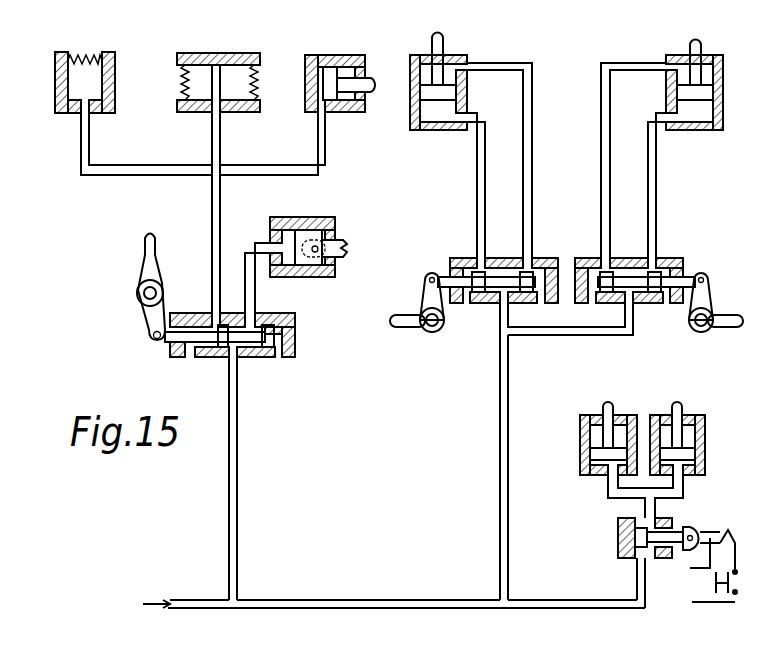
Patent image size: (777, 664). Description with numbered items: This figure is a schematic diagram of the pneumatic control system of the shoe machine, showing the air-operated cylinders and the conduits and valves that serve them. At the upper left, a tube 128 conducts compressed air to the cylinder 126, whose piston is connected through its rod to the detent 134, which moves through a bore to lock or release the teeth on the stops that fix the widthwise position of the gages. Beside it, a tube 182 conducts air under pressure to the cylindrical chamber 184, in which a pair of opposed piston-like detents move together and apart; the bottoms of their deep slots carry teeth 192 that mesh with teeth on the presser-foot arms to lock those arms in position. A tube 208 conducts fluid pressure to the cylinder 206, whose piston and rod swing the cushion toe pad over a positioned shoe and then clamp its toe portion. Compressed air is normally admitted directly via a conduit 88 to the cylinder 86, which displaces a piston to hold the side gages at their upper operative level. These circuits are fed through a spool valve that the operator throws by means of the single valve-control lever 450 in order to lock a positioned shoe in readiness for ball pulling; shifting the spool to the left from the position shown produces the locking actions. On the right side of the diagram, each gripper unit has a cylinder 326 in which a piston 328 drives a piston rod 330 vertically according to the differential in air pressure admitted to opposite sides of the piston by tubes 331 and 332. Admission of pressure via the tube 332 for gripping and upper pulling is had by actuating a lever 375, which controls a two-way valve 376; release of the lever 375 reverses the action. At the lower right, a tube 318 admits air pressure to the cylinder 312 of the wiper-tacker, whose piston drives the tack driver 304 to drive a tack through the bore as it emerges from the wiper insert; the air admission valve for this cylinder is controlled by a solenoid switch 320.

The cylinder 126 is at (114, 63).
The detent 134 is at (78, 67).
The tube 128 is at (80, 148).
The cylindrical chamber 184 is at (246, 53).
The teeth 192 is at (190, 86).
The tube 182 is at (221, 143).
The cylinder 206 is at (338, 55).
The tube 208 is at (326, 155).
The cylinder 86 is at (306, 218).
The conduit 88 is at (256, 303).
The valve-control lever 450 is at (146, 250).
The cylinder 326 is at (425, 131).
The piston 328 is at (420, 93).
The piston rod 330 is at (444, 43).
The tube 331 is at (600, 127).
The tube 332 is at (478, 210).
The two-way valve 376 is at (590, 259).
The lever 375 is at (402, 321).
The cylinder 312 is at (580, 445).
The driver 304 is at (603, 409).
The tube 318 is at (643, 510).
The solenoid switch 320 is at (737, 578).